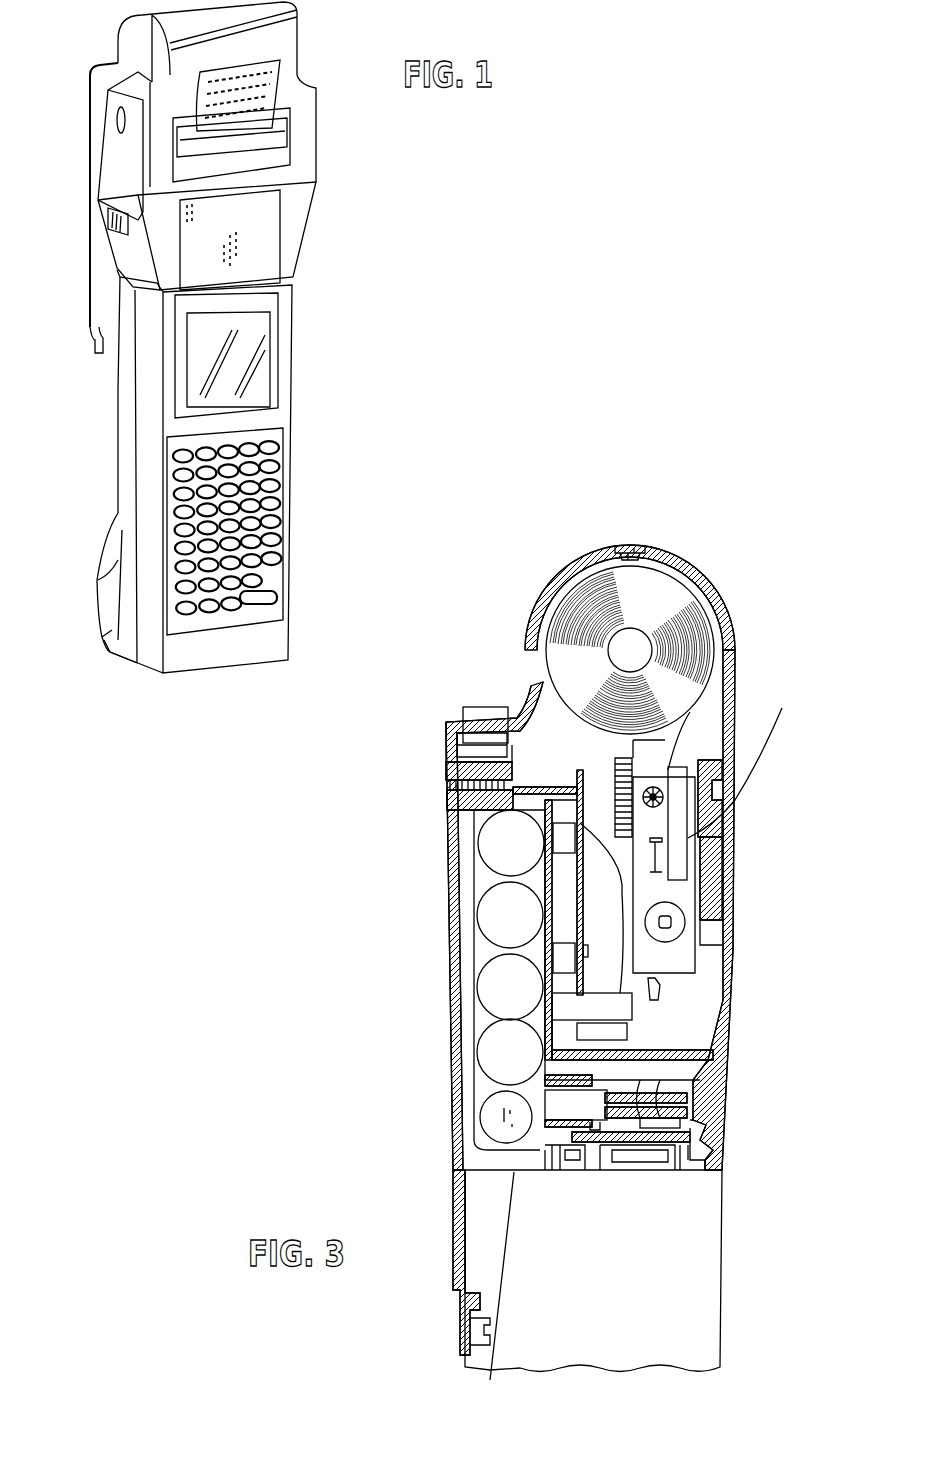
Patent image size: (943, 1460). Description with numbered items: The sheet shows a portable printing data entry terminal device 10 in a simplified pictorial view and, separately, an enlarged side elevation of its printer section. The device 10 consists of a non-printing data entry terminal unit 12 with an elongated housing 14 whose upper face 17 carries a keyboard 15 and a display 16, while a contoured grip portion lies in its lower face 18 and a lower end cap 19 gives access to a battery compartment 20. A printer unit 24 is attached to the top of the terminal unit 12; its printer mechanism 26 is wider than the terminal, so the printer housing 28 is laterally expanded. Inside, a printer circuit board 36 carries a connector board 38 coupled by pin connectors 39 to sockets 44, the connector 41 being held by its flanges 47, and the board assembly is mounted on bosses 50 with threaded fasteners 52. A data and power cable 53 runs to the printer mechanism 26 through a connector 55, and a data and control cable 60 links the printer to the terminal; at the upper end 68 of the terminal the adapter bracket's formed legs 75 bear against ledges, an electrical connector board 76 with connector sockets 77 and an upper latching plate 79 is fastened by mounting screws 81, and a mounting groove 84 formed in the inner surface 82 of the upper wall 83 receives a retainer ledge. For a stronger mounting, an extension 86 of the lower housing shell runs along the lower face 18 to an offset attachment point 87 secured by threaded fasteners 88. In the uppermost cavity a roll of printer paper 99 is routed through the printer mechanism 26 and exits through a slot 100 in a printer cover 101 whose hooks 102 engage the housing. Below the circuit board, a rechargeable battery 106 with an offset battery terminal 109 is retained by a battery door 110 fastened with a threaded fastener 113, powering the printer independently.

In FIG. 1, the portable printing data entry terminal device 10 is at (358, 290).
In FIG. 1, the data entry terminal unit 12 is at (298, 490).
In FIG. 1, the housing 14 is at (113, 583).
In FIG. 1, the keyboard 15 is at (272, 558).
In FIG. 1, the display 16 is at (268, 372).
In FIG. 1, the upper face 17 is at (278, 417).
In FIG. 1, the lower face 18 is at (112, 517).
In FIG. 1, the lower end cap 19 is at (110, 653).
In FIG. 1, the battery compartment 20 is at (110, 610).
In FIG. 1, the printer unit 24 is at (325, 227).
In FIG. 3, the printer mechanism 26 is at (690, 762).
In FIG. 1, the printer housing 28 is at (312, 143).
In FIG. 3, the printer circuit board 36 is at (580, 978).
In FIG. 3, the connector board 38 is at (532, 787).
In FIG. 3, the pin connectors 39 is at (553, 780).
In FIG. 3, the connector 41 is at (486, 713).
In FIG. 3, the sockets 44 is at (570, 790).
In FIG. 3, the flanges 47 is at (478, 733).
In FIG. 3, the bosses 50 is at (530, 908).
In FIG. 3, the threaded fasteners 52 is at (583, 842).
In FIG. 3, the data and power cable 53 is at (622, 895).
In FIG. 3, the connector 55 is at (633, 1030).
In FIG. 3, the data and control cable 60 is at (628, 1035).
In FIG. 3, the upper end 68 is at (728, 1180).
In FIG. 3, the formed legs 75 is at (542, 1165).
In FIG. 3, the electrical connector board 76 is at (628, 1142).
In FIG. 3, the connector sockets 77 is at (573, 1158).
In FIG. 3, the upper latching plate 79 is at (656, 1118).
In FIG. 3, the mounting screws 81 is at (592, 1122).
In FIG. 3, the inner surface 82 is at (712, 1125).
In FIG. 3, the upper wall 83 is at (718, 1138).
In FIG. 3, the mounting groove 84 is at (716, 1152).
In FIG. 1, the extension 86 is at (90, 293).
In FIG. 1, the attachment point 87 is at (98, 355).
In FIG. 3, the threaded fasteners 88 is at (470, 1326).
In FIG. 3, the roll of printer paper 99 is at (660, 590).
In FIG. 3, the slot 100 is at (725, 822).
In FIG. 3, the printer cover 101 is at (713, 581).
In FIG. 3, the hooks 102 is at (628, 546).
In FIG. 3, the rechargeable battery 106 is at (480, 1048).
In FIG. 3, the battery terminal 109 is at (485, 1118).
In FIG. 3, the battery door 110 is at (450, 906).
In FIG. 3, the threaded fastener 113 is at (448, 796).